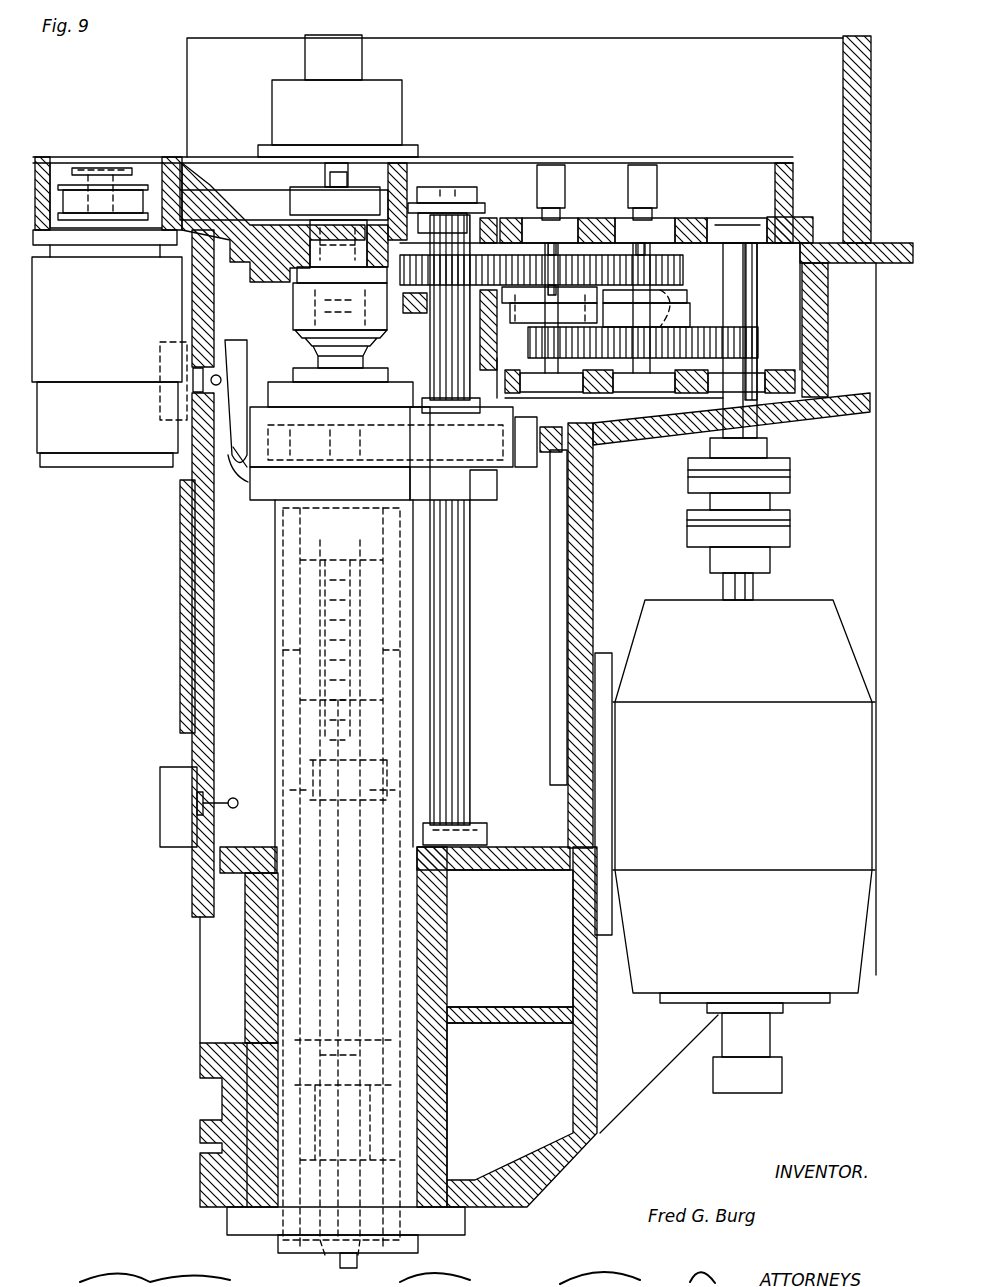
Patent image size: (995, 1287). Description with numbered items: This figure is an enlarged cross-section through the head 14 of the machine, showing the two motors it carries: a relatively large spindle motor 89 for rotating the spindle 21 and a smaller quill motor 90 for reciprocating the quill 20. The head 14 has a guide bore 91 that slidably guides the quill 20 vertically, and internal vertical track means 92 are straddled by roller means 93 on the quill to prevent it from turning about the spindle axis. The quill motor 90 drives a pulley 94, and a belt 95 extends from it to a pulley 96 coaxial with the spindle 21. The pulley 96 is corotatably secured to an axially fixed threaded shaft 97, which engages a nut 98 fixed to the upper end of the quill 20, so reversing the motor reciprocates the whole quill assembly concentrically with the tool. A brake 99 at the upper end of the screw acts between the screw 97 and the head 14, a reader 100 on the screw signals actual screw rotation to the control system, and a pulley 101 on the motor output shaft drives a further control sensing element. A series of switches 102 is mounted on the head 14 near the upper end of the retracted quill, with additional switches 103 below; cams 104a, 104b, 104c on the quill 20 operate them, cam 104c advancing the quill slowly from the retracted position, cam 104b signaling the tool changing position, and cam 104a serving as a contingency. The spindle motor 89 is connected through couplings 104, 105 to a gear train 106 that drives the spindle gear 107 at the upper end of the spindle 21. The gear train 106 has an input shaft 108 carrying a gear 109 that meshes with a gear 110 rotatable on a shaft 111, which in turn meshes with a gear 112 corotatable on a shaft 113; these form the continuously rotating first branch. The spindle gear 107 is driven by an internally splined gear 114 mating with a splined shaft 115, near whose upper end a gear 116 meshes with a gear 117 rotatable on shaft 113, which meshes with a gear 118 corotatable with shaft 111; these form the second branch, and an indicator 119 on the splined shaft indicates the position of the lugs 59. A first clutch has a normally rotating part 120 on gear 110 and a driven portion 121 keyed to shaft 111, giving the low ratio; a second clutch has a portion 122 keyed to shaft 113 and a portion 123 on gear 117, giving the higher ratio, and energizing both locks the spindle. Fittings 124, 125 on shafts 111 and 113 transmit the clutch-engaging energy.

The head 14 is at (592, 566).
The quill 20 is at (415, 607).
The spindle 21 is at (395, 1262).
The lugs 59 is at (300, 1262).
The spindle motor 89 is at (708, 776).
The quill motor 90 is at (102, 347).
The guide bore 91 is at (420, 928).
The internal vertical track means 92 is at (556, 625).
The roller means 93 is at (552, 424).
The pulley 94 is at (78, 215).
The belt 95 is at (218, 200).
The pulley 96 is at (303, 188).
The threaded shaft 97 is at (300, 313).
The nut 98 is at (340, 368).
The brake 99 is at (400, 118).
The reader 100 is at (345, 45).
The pulley 101 is at (90, 168).
The switches 102 is at (158, 408).
The additional switches 103 is at (168, 806).
The coupling 104 is at (778, 524).
The cam 104a is at (240, 362).
The cam 104b is at (236, 485).
The cam 104c is at (245, 478).
The coupling 105 is at (778, 470).
The gear train 106 is at (622, 418).
The spindle gear 107 is at (393, 450).
The input shaft 108 is at (748, 298).
The gear 109 is at (757, 330).
The gear 110 is at (640, 335).
The shaft 111 is at (642, 395).
The gear 112 is at (535, 343).
The shaft 113 is at (510, 372).
The gear 114 is at (487, 465).
The splined shaft 115 is at (462, 551).
The gear 116 is at (400, 328).
The gear 117 is at (550, 306).
The gear 118 is at (683, 270).
The indicator 119 is at (465, 196).
The normally rotating clutch part 120 is at (688, 320).
The driven clutch portion 121 is at (680, 300).
The clutch portion 122 is at (528, 327).
The clutch portion 123 is at (549, 295).
The fitting 124 is at (546, 170).
The fitting 125 is at (645, 175).